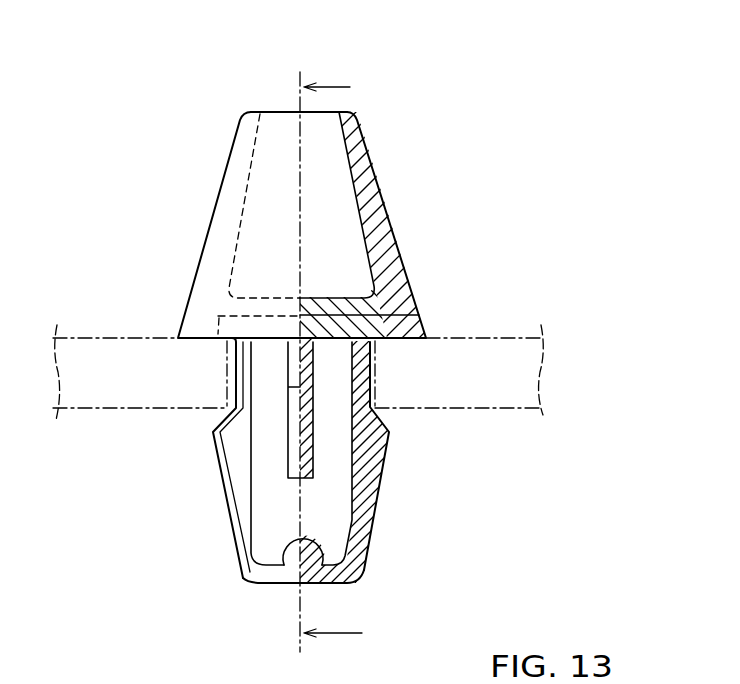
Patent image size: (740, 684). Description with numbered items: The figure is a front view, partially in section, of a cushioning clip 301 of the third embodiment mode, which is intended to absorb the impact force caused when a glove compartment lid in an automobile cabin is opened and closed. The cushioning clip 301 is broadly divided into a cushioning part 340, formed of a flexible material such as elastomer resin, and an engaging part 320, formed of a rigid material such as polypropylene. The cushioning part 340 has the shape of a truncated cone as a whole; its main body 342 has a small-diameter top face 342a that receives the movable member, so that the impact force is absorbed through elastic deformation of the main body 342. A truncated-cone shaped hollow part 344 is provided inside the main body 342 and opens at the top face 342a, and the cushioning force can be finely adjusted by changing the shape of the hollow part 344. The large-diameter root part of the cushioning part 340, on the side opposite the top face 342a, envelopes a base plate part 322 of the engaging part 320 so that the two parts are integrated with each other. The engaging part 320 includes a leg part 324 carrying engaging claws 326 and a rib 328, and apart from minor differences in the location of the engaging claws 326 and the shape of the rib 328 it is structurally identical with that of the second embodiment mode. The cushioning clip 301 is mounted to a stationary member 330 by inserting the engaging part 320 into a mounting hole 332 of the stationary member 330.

The cushioning clip 301 is at (451, 240).
The engaging part 320 is at (420, 494).
The base plate part 322 is at (375, 327).
The leg part 324 is at (267, 510).
The engaging claws 326 is at (213, 428).
The rib 328 is at (288, 445).
The stationary member 330 is at (528, 373).
The mounting hole 332 is at (227, 371).
The cushioning part 340 is at (177, 149).
The main body 342 is at (220, 252).
The top face 342a is at (271, 93).
The hollow part 344 is at (324, 167).